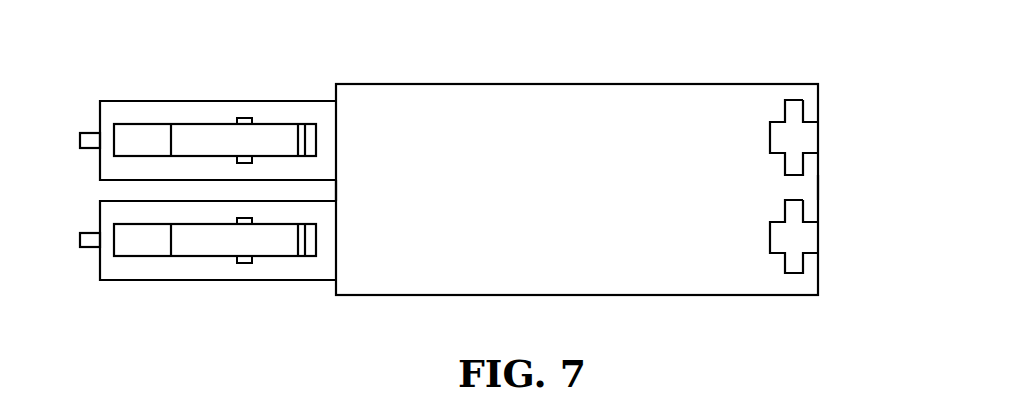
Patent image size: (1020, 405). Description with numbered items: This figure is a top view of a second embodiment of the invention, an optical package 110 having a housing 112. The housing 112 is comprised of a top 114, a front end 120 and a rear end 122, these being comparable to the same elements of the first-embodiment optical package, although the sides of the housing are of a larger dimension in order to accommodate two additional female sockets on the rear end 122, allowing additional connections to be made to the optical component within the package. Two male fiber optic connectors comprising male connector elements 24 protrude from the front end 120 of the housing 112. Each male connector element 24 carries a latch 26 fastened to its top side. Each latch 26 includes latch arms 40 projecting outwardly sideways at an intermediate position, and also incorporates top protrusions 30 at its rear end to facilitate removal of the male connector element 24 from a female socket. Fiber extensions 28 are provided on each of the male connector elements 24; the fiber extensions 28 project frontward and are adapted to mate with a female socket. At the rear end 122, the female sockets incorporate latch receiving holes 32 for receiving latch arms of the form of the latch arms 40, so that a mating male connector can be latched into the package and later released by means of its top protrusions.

The optical package 110 is at (632, 43).
The housing 112 is at (502, 84).
The top 114 is at (568, 208).
The front end 120 is at (335, 97).
The rear end 122 is at (818, 177).
The latch receiving holes 32 is at (800, 133).
The male connector elements 24 is at (143, 101).
The latch 26 is at (198, 124).
The fiber extensions 28 is at (93, 133).
The top protrusions 30 is at (308, 124).
The latch arms 40 is at (244, 118).